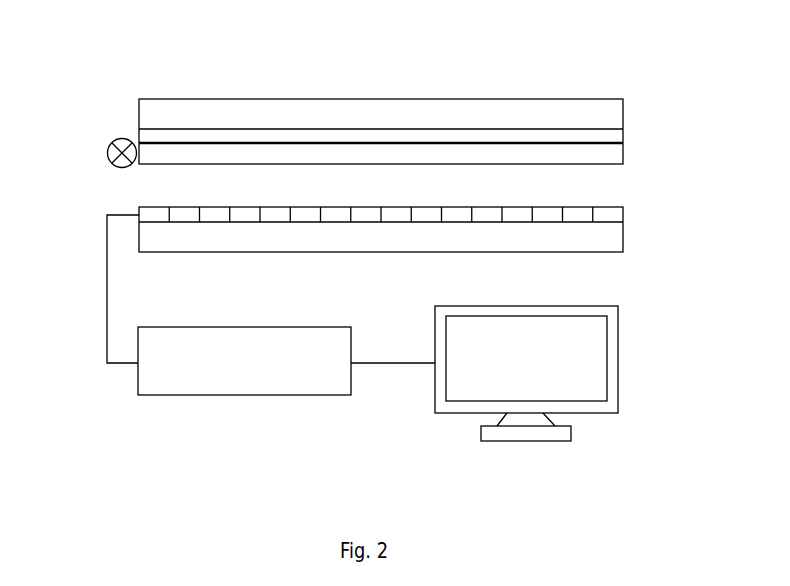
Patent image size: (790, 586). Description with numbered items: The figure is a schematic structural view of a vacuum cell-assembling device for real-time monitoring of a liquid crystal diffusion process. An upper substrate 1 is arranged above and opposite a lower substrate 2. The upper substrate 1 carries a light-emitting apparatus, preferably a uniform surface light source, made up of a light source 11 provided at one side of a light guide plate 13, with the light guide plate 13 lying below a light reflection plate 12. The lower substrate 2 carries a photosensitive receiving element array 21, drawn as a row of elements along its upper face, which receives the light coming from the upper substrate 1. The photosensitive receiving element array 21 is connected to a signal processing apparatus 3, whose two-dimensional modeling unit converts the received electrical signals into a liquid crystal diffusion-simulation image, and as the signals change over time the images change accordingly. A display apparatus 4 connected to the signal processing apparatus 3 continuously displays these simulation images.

The upper substrate 1 is at (215, 115).
The light source 11 is at (107, 153).
The light reflection plate 12 is at (577, 133).
The light guide plate 13 is at (577, 155).
The lower substrate 2 is at (577, 242).
The photosensitive receiving element array 21 is at (577, 213).
The signal processing apparatus 3 is at (198, 395).
The display apparatus 4 is at (618, 357).